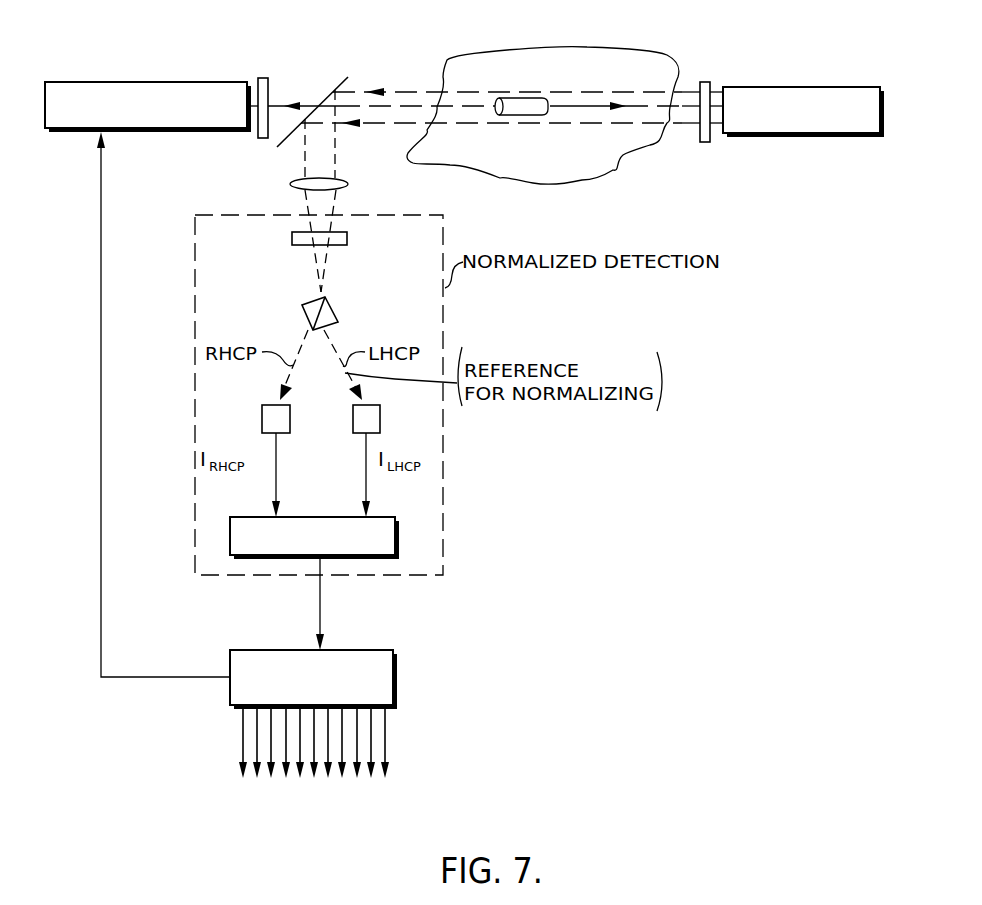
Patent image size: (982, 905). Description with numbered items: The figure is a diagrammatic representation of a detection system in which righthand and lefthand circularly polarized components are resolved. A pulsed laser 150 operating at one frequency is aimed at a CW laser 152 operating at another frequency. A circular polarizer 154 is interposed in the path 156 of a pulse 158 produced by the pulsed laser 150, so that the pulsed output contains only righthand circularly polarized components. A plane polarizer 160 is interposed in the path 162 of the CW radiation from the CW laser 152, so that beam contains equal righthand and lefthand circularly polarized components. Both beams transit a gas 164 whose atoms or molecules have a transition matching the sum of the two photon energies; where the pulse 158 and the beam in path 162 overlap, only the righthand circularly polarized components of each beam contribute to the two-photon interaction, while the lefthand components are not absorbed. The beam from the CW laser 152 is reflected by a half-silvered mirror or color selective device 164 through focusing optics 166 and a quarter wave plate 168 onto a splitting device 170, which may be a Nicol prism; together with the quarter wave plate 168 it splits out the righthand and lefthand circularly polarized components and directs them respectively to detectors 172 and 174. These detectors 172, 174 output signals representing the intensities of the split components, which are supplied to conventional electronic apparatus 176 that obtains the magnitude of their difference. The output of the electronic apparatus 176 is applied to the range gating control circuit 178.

The pulsed laser 150 is at (174, 82).
The CW laser 152 is at (808, 87).
The circular polarizer 154 is at (433, 50).
The path 156 is at (297, 100).
The pulse 158 is at (543, 98).
The plane polarizer 160 is at (878, 53).
The path 162 is at (673, 125).
The gas 164 is at (573, 168).
The focusing optics 166 is at (340, 181).
The quarter wave plate 168 is at (347, 240).
The splitting device 170 is at (338, 312).
The detector 172 is at (262, 424).
The detector 174 is at (380, 426).
The electronic apparatus 176 is at (375, 517).
The range gating control circuit 178 is at (355, 650).